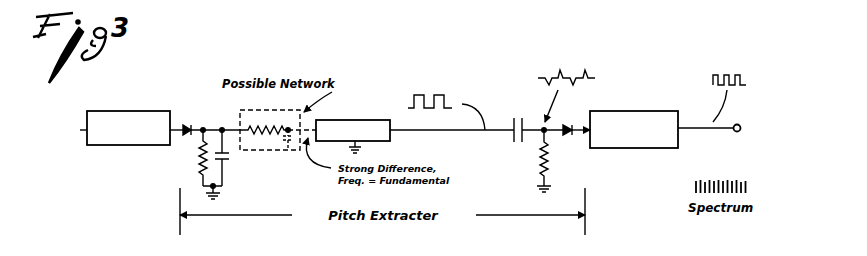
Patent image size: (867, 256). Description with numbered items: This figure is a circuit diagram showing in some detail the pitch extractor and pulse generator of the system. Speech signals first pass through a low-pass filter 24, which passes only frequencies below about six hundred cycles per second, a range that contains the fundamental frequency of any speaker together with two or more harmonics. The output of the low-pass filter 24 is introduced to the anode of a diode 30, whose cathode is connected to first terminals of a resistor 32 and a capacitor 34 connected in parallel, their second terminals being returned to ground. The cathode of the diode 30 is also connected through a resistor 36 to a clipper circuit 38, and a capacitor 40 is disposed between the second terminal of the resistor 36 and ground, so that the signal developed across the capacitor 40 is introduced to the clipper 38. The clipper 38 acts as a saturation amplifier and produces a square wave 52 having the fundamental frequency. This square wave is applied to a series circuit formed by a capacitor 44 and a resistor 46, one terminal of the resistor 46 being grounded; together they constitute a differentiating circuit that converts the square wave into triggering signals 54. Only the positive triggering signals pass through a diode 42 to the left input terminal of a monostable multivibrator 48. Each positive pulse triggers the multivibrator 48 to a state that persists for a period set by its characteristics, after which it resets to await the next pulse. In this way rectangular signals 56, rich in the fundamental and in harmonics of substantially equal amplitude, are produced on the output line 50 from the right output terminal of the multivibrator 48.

The low-pass filter 24 is at (170, 111).
The diode 30 is at (188, 125).
The resistor 32 is at (197, 160).
The capacitor 34 is at (228, 162).
The resistor 36 is at (264, 137).
The clipper circuit 38 is at (390, 118).
The capacitor 40 is at (275, 150).
The diode 42 is at (570, 125).
The capacitor 44 is at (522, 142).
The resistor 46 is at (540, 172).
The multivibrator 48 is at (679, 104).
The line 50 is at (700, 129).
The square wave 52 is at (413, 96).
The triggering signals 54 is at (540, 78).
The rectangular signals 56 is at (748, 79).